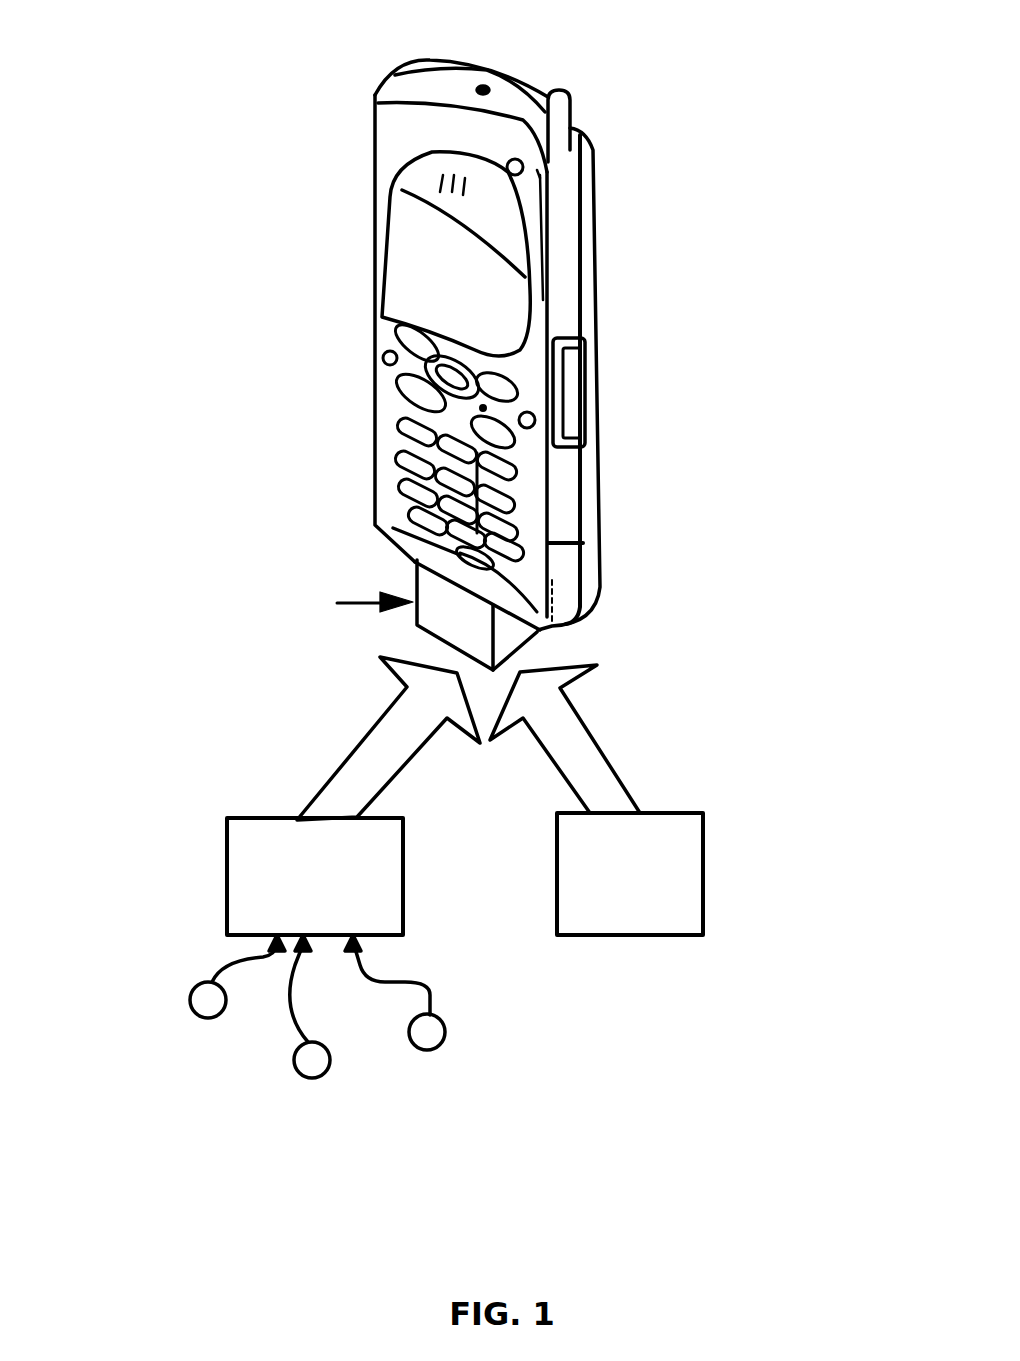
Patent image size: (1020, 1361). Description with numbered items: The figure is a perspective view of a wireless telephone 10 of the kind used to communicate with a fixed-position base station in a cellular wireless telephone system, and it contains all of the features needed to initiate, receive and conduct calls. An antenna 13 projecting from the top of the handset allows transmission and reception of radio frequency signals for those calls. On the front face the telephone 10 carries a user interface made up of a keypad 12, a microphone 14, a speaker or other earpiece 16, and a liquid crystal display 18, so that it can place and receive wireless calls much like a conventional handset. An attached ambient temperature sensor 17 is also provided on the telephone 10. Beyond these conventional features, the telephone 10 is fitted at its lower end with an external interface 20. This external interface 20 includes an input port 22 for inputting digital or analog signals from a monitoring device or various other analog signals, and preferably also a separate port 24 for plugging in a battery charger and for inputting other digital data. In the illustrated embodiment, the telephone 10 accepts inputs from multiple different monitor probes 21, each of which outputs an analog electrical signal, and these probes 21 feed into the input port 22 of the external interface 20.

The wireless telephone 10 is at (377, 90).
The keypad 12 is at (410, 420).
The antenna 13 is at (560, 108).
The microphone 14 is at (455, 570).
The speaker 16 is at (465, 193).
The ambient temperature sensor 17 is at (567, 378).
The liquid crystal display 18 is at (472, 273).
The external interface 20 is at (455, 623).
The monitor probes 21 is at (192, 997).
The input port 22 is at (245, 880).
The separate port 24 is at (688, 867).